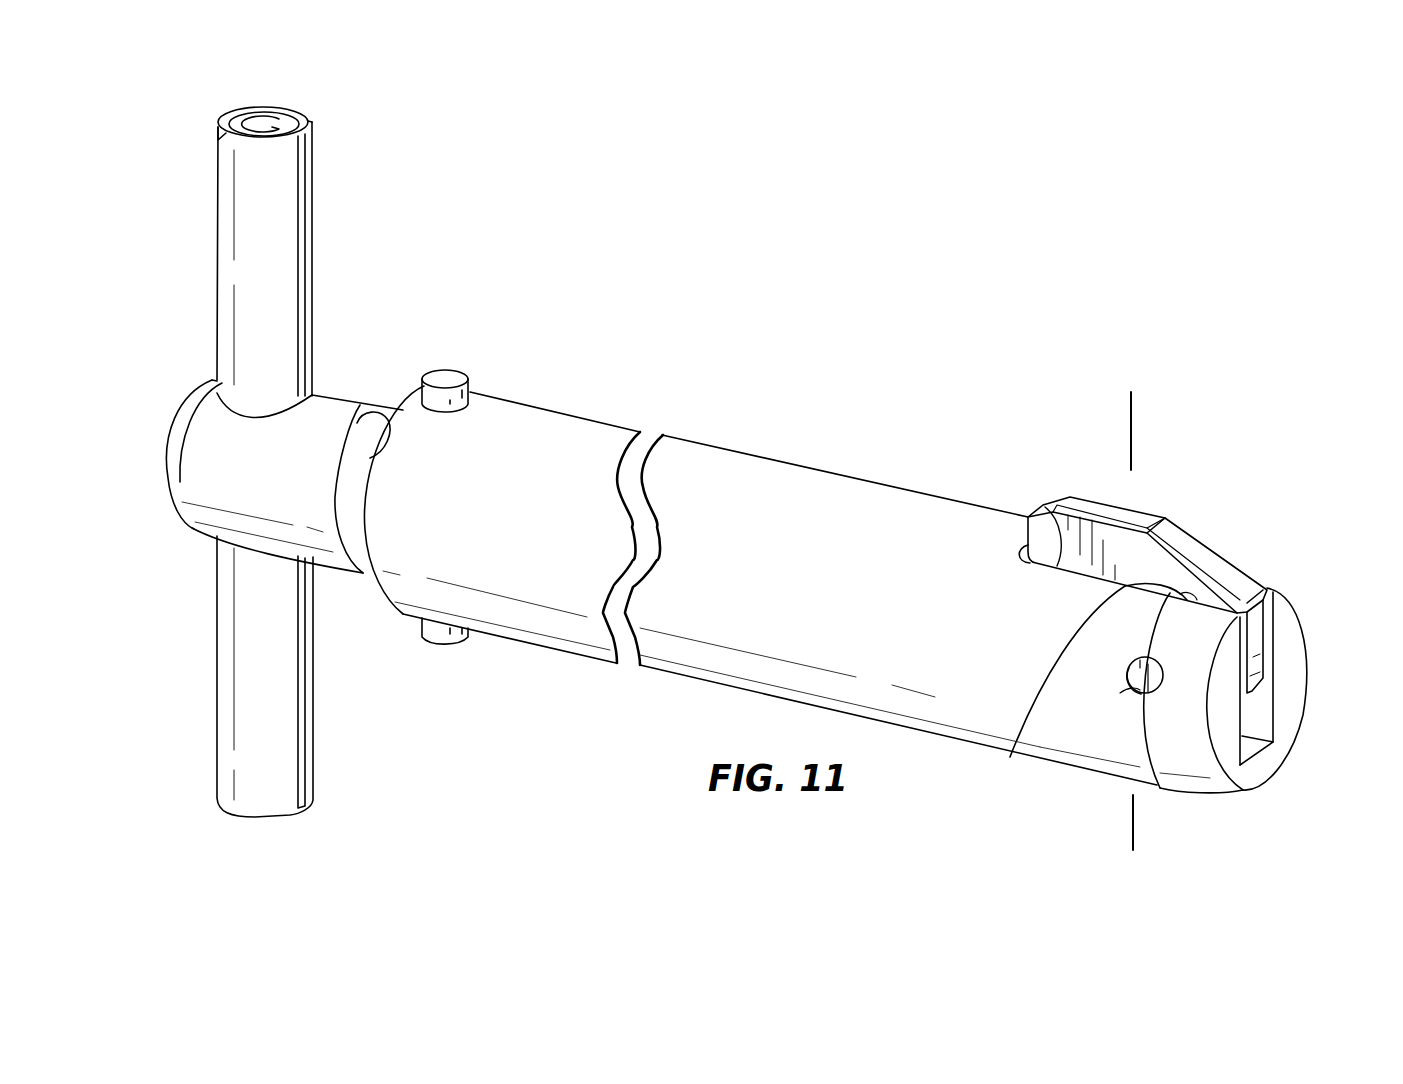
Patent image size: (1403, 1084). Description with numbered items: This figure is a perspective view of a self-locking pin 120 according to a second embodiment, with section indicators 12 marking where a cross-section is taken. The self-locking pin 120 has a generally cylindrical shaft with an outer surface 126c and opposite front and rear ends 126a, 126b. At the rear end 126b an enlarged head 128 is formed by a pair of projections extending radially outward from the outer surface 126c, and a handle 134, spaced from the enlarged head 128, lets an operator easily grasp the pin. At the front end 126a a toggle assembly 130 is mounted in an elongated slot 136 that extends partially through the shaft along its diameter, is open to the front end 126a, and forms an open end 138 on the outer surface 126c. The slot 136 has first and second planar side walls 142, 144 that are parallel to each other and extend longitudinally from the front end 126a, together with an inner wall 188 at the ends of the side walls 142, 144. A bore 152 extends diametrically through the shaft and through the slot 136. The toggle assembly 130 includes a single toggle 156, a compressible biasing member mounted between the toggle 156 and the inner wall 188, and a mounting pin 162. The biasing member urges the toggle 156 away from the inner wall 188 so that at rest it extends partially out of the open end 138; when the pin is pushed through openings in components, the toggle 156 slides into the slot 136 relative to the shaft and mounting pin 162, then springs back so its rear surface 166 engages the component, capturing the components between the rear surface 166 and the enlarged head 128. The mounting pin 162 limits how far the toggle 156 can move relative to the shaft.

The self-locking pin 120 is at (832, 412).
The handle 134 is at (200, 446).
The rear end 126b is at (358, 423).
The outer surface 126c is at (805, 577).
The enlarged head 128 is at (452, 377).
The rear surface 166 is at (1020, 535).
The toggle assembly 130 is at (1203, 522).
The open end 138 is at (1060, 550).
The toggle 156 is at (1133, 508).
The second planar side wall 144 is at (1248, 588).
The front end 126a is at (1287, 615).
The elongated slot 136 is at (1250, 712).
The inner wall 188 is at (1251, 755).
The first planar side wall 142 is at (1010, 757).
The bore 152 is at (1130, 689).
The mounting pin 162 is at (1157, 684).
The section line 12 is at (1128, 412).